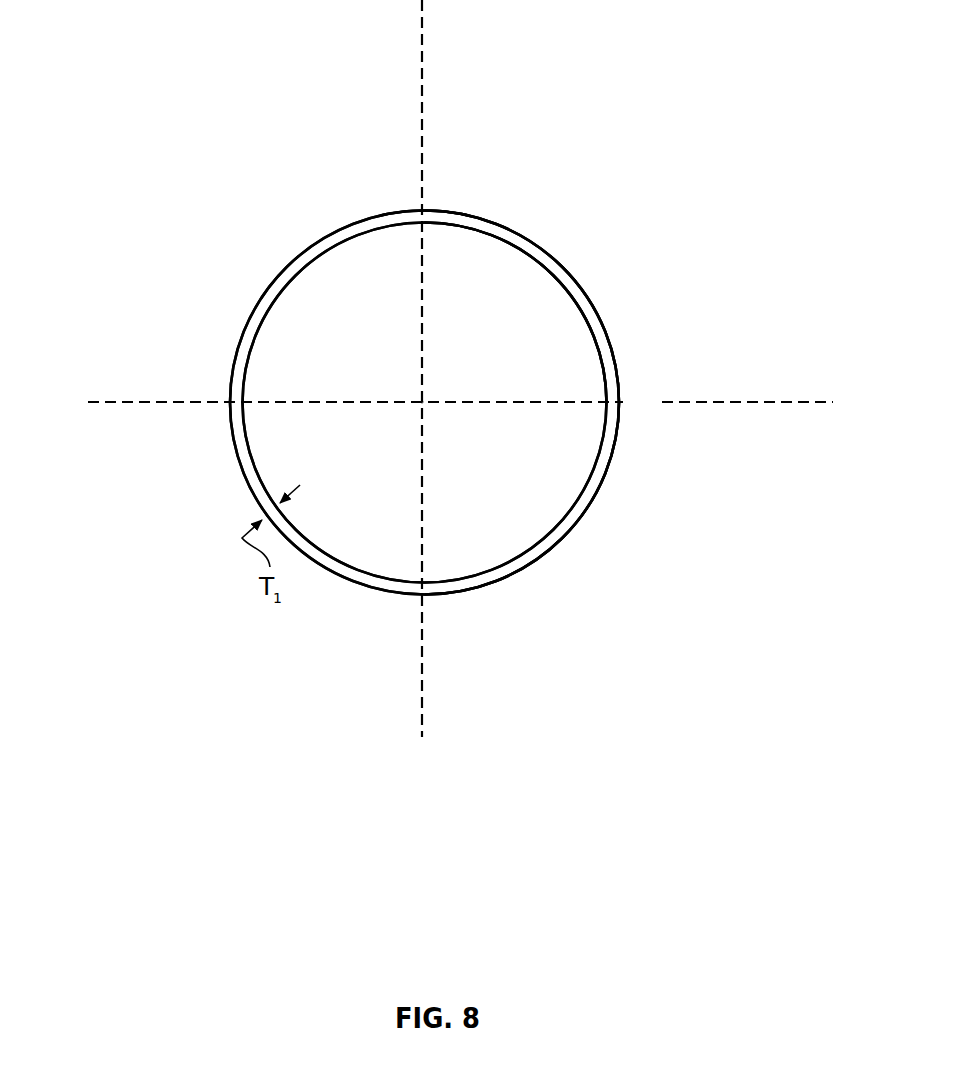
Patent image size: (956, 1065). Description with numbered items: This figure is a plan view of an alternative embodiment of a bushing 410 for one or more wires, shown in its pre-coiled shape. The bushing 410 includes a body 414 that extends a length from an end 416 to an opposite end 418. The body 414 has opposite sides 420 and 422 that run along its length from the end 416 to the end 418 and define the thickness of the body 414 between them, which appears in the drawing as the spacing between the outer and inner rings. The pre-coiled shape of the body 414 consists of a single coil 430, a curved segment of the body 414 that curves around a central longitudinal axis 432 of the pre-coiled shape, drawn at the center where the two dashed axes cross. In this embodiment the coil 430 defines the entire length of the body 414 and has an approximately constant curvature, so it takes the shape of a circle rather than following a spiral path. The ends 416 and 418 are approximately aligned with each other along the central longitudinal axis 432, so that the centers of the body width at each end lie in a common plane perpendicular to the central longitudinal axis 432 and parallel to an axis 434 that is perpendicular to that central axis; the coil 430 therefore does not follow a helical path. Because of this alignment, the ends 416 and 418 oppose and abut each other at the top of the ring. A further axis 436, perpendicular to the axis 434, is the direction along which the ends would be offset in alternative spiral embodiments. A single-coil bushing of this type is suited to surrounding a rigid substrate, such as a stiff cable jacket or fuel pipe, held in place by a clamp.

The bushing 410 is at (627, 180).
The body 414 is at (552, 564).
The end 416 is at (408, 208).
The opposite end 418 is at (436, 208).
The side 420 is at (613, 338).
The side 422 is at (589, 343).
The coil 430 is at (565, 283).
The central longitudinal axis 432 is at (420, 403).
The axis 434 is at (140, 404).
The axis 436 is at (424, 53).